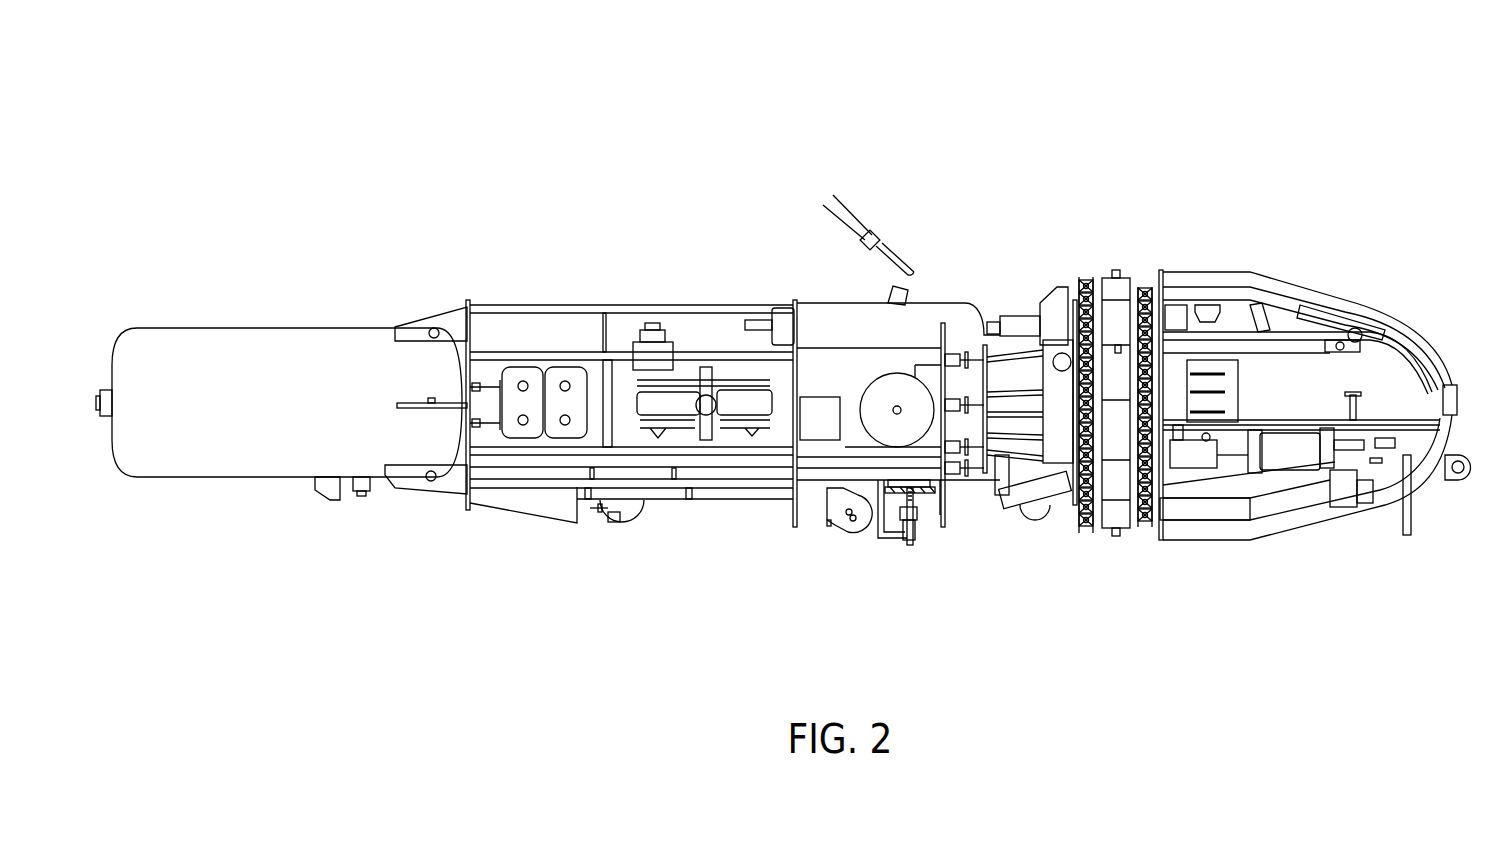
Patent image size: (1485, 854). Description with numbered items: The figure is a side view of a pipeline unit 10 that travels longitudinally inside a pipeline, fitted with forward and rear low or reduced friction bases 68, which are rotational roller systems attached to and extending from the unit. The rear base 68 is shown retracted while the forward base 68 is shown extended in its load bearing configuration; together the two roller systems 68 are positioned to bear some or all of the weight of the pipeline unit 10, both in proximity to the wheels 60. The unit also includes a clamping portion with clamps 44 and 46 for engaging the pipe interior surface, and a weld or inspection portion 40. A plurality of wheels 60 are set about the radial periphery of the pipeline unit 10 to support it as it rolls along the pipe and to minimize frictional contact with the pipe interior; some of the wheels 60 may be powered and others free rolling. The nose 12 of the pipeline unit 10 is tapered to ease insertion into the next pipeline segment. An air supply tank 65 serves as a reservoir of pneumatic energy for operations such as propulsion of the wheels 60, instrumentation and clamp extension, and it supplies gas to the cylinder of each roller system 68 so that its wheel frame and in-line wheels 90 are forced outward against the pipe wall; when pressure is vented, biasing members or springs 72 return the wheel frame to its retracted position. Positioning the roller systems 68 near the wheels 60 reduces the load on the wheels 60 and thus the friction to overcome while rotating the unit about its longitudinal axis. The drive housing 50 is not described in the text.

The pipeline unit 10 is at (990, 110).
The nose 12 is at (1352, 277).
The weld or inspection portion 40 is at (1145, 240).
The clamp 44 is at (1083, 528).
The clamp 46 is at (1143, 530).
The drive housing 50 is at (1117, 532).
The wheels 60 is at (650, 403).
The air supply tank 65 is at (280, 402).
The low or reduced friction base 68 is at (595, 530).
The biasing members or springs 72 is at (915, 503).
The wheels 90 is at (913, 548).